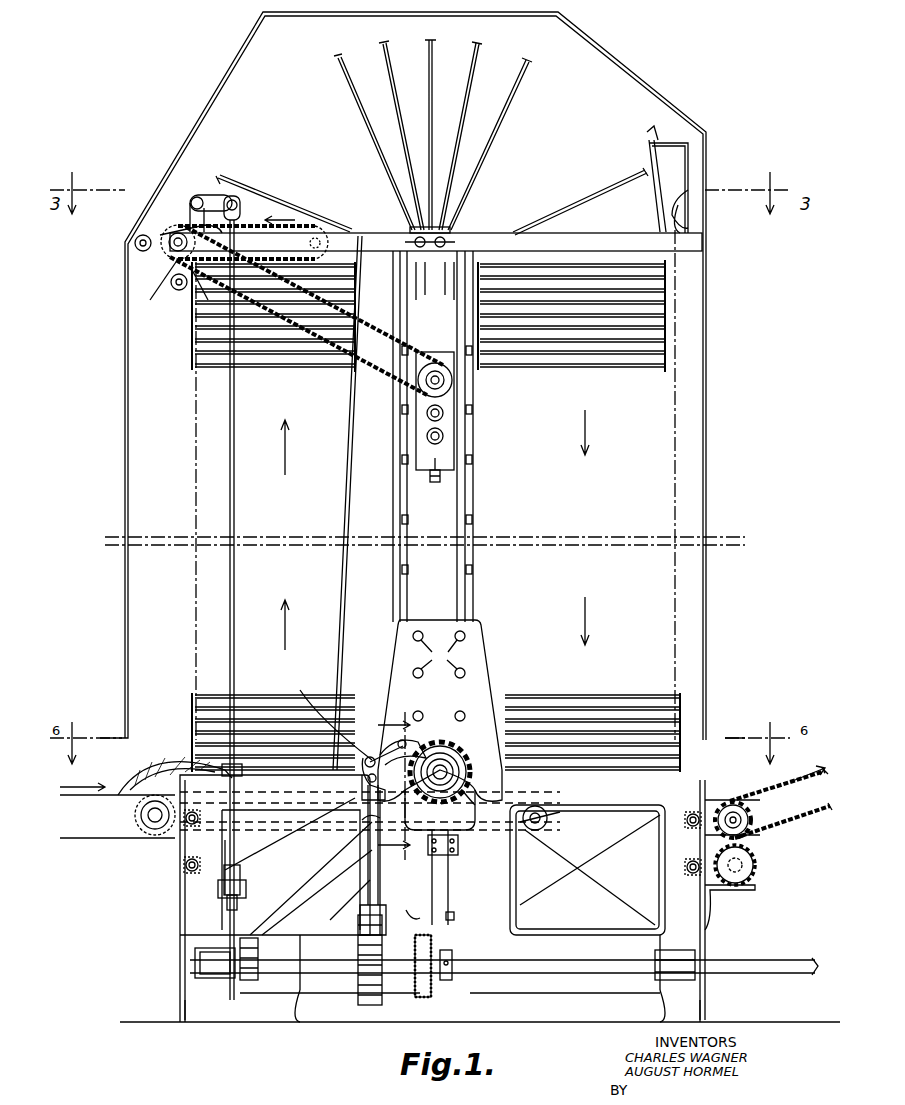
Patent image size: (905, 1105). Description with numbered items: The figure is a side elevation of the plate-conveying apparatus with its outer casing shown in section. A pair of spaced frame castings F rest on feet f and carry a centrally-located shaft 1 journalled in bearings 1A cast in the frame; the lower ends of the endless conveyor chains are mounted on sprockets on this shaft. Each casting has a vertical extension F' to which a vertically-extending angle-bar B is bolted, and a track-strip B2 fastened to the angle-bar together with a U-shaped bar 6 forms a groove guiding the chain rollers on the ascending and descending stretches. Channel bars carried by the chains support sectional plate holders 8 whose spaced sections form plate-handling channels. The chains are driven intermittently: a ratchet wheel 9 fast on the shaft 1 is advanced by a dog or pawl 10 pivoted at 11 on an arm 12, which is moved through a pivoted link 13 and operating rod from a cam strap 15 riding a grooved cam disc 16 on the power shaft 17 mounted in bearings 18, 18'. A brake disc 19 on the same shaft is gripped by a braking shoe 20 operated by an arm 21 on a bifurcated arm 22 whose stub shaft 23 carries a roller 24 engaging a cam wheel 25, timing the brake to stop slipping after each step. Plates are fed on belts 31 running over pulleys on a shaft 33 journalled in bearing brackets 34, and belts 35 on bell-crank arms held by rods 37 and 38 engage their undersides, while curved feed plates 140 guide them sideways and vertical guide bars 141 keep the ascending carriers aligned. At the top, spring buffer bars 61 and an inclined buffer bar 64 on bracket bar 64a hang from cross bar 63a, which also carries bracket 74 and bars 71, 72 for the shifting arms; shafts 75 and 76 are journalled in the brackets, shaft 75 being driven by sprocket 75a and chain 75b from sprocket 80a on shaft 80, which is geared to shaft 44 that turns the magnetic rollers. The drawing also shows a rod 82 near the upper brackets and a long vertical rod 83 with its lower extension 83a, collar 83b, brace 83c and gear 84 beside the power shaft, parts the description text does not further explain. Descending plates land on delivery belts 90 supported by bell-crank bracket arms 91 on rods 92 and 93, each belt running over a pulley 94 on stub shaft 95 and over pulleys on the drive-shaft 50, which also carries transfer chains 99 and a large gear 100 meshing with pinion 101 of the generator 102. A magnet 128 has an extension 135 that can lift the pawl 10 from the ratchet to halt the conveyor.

The centrally-located shaft 1 is at (447, 772).
The bearings 1A is at (370, 872).
The U-shaped bar 6 is at (393, 485).
The sectional plate holder 8 is at (422, 100).
The ratchet wheel 9 is at (457, 758).
The dog or pawl 10 is at (395, 745).
The pivot 11 is at (365, 762).
The arm 12 is at (393, 862).
The pivoted link 13 is at (384, 772).
The cam strap 15 is at (365, 932).
The grooved cam disc 16 is at (358, 975).
The power shaft 17 is at (512, 975).
The bearing 18 is at (211, 976).
The bearing 18' is at (650, 981).
The disc or wheel 19 is at (468, 790).
The braking shoe 20 is at (455, 805).
The arm 21 is at (448, 870).
The bifurcated arm 22 is at (440, 905).
The stub shaft 23 is at (406, 904).
The roller 24 is at (455, 918).
The cam wheel 25 is at (436, 950).
The belts 31 is at (100, 798).
The shaft 33 is at (145, 812).
The bearing brackets 34 is at (150, 832).
The belts 35 is at (290, 834).
The rod 37 is at (188, 824).
The rod 38 is at (188, 870).
The shaft 44 is at (445, 418).
The drive-shaft 50 is at (735, 805).
The spring buffer bar 61 is at (690, 188).
The cross bar 63a is at (560, 232).
The flexible spring buffer bar 64 is at (653, 210).
The bracket bar 64a is at (686, 152).
The bar 71 is at (135, 243).
The bar 72 is at (176, 255).
The bracket 74 is at (162, 232).
The shaft 75 is at (172, 280).
The sprocket 75a is at (150, 300).
The chain 75b is at (205, 296).
The shaft 76 is at (197, 195).
The shaft 80 is at (425, 380).
The sprocket 80a is at (455, 387).
The rod 82 is at (238, 200).
The vertical rod 83 is at (228, 420).
The rod extension 83a is at (240, 935).
The collar 83b is at (248, 915).
The brace 83c is at (280, 905).
The gear 84 is at (248, 980).
The delivery belts 90 is at (640, 850).
The bell-crank bracket arms 91 is at (592, 840).
The rod 92 is at (690, 812).
The rod 93 is at (693, 875).
The pulley 94 is at (560, 822).
The stub shaft 95 is at (548, 800).
The chains 99 is at (790, 786).
The large gear 100 is at (755, 805).
The pinion 101 is at (745, 870).
The generator 102 is at (755, 856).
The magnet 128 is at (334, 717).
The extension 135 is at (413, 740).
The curved feed plates 140 is at (160, 760).
The vertical buffer or guide bars 141 is at (344, 508).
The angle-bar B is at (416, 497).
The track-strip B2 is at (439, 676).
The frame casting F is at (480, 898).
The vertical extension F' is at (451, 710).
The feet f is at (180, 998).